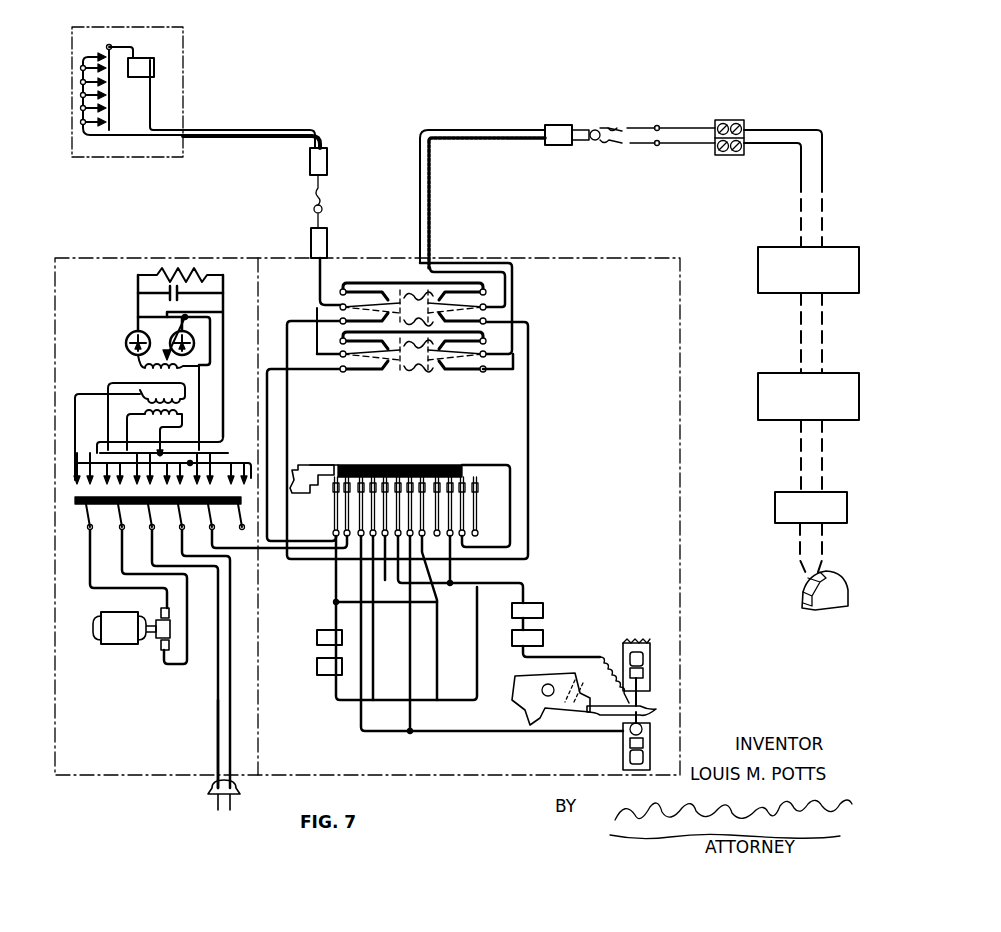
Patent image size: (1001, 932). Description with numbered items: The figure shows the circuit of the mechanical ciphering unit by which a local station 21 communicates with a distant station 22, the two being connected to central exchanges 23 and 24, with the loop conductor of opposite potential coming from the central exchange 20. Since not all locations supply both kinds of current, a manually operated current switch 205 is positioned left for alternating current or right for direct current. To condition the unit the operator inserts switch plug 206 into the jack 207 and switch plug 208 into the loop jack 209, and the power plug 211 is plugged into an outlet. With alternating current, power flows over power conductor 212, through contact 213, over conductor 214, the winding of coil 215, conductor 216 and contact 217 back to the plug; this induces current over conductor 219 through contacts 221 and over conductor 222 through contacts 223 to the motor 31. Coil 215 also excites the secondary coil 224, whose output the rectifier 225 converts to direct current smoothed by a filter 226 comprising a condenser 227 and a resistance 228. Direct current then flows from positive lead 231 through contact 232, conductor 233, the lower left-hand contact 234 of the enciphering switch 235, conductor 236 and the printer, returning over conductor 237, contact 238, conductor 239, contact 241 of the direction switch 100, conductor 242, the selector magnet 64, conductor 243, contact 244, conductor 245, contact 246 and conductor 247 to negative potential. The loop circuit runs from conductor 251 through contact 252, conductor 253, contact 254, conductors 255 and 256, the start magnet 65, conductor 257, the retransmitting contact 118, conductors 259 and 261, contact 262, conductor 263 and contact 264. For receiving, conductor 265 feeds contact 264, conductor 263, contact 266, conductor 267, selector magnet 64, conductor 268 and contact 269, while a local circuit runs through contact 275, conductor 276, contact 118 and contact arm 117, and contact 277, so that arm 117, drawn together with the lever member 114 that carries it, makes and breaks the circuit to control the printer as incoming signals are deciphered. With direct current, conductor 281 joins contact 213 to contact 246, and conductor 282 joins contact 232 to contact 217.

The station 21 is at (184, 57).
The jack 207 is at (309, 163).
The switch plug 206 is at (331, 233).
The switch plug 208 is at (563, 146).
The loop jack 209 is at (640, 145).
The central exchange 23 is at (785, 262).
The central exchange 24 is at (768, 408).
The central exchange 20 is at (830, 496).
The distant station 22 is at (802, 587).
The filter 226 is at (181, 262).
The resistance 228 is at (208, 262).
The condenser 227 is at (138, 291).
The positive lead 231 is at (224, 322).
The rectifier 225 is at (124, 334).
The secondary coil 224 is at (139, 372).
The conductor 216 is at (138, 389).
The conductor 219 is at (105, 395).
The coil 215 is at (146, 430).
The conductor 214 is at (160, 452).
The conductor 282 is at (103, 462).
The conductor 247 is at (178, 412).
The conductor 281 is at (212, 442).
The conductor 222 is at (74, 466).
The current switch 205 is at (72, 508).
The contacts 223 is at (87, 515).
The contacts 221 is at (120, 515).
The contact 213 is at (151, 515).
The contact 217 is at (179, 514).
The contact 246 is at (211, 514).
The motor 31 is at (120, 652).
The power conductor 212 is at (217, 696).
The power plug 211 is at (204, 791).
The conductor 236 is at (314, 277).
The conductor 237 is at (332, 290).
The conductor 265 is at (422, 271).
The contact 238 is at (413, 302).
The conductor 239 is at (285, 325).
The conductor 251 is at (515, 273).
The contact 264 is at (497, 306).
The conductor 233 is at (295, 374).
The contact 234 is at (401, 370).
The switch 235 is at (412, 384).
The contact 252 is at (432, 368).
The conductor 253 is at (512, 389).
The conductor 263 is at (530, 437).
The contact 244 is at (337, 485).
The direction switch 100 is at (364, 452).
The contact 266 is at (434, 476).
The contact 254 is at (457, 497).
The contact 269 is at (485, 531).
The contact 275 is at (343, 504).
The contact 241 is at (382, 505).
The contact 232 is at (240, 550).
The conductor 245 is at (335, 585).
The conductor 243 is at (336, 605).
The selector magnet 64 is at (316, 641).
The conductor 242 is at (373, 626).
The contact 277 is at (392, 568).
The contact 262 is at (417, 602).
The conductor 267 is at (416, 621).
The conductor 255 is at (456, 580).
The conductor 256 is at (523, 589).
The start magnet 65 is at (543, 611).
The conductor 257 is at (552, 657).
The contact arm 117 is at (602, 708).
The lever 114 is at (547, 705).
The conductor 268 is at (535, 686).
The retransmitting contact 118 is at (665, 700).
The conductor 261 is at (410, 700).
The conductor 276 is at (468, 639).
The conductor 259 is at (385, 732).